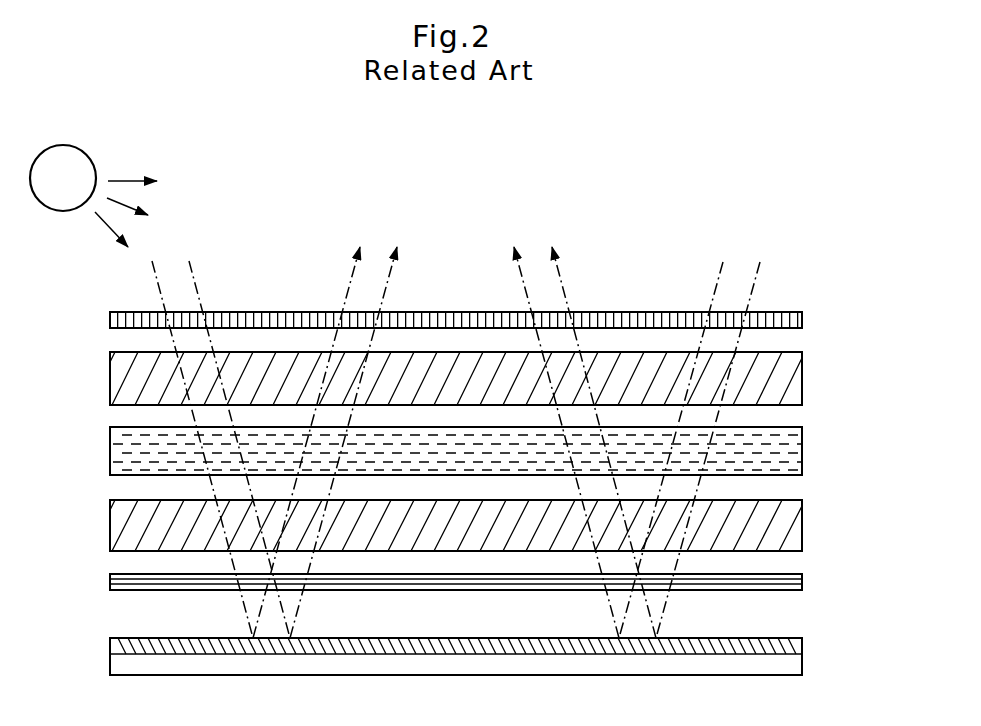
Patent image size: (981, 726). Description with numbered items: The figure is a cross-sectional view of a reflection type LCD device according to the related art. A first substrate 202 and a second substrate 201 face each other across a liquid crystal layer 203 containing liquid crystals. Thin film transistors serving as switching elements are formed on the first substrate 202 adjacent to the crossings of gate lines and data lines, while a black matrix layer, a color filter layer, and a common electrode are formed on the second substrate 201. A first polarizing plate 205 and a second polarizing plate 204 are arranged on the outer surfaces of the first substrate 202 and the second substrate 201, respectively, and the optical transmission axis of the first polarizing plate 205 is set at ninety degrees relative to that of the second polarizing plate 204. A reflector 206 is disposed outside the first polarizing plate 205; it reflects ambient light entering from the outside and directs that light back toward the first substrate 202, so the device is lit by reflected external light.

The second substrate 201 is at (802, 378).
The first substrate 202 is at (802, 525).
The liquid crystal layer 203 is at (802, 452).
The second polarizing plate 204 is at (802, 322).
The first polarizing plate 205 is at (802, 582).
The reflector 206 is at (802, 655).